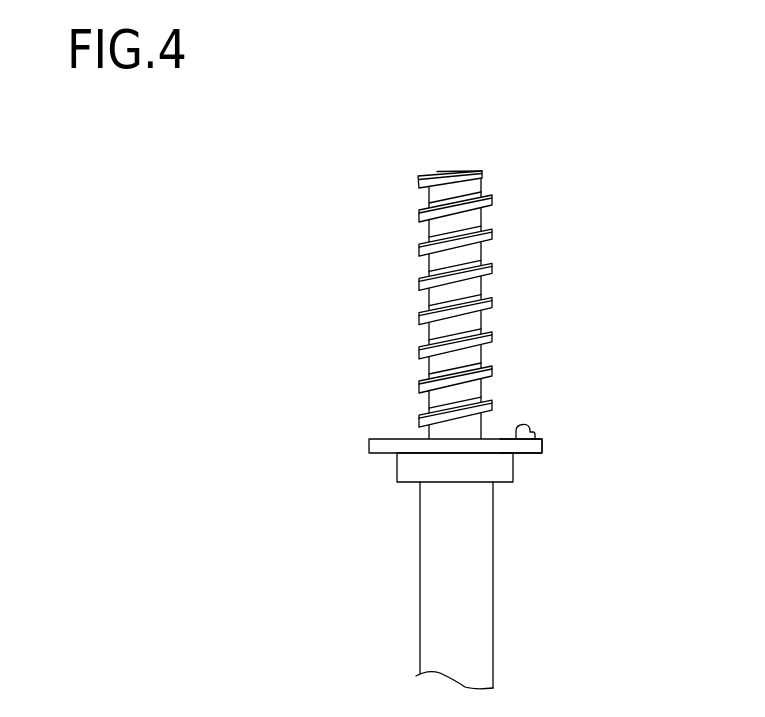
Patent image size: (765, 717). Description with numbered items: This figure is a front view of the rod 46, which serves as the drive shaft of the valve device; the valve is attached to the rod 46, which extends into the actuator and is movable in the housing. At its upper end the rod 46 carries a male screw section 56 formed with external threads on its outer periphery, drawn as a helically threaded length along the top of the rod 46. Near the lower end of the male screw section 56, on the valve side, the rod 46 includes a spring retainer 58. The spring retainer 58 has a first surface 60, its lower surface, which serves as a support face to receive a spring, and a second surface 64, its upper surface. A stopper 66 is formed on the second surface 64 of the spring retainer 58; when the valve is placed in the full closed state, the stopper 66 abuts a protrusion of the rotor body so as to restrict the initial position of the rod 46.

The rod 46 is at (506, 592).
The male screw section 56 is at (483, 290).
The spring retainer 58 is at (525, 447).
The first surface 60 is at (492, 457).
The second surface 64 is at (390, 439).
The stopper 66 is at (531, 425).